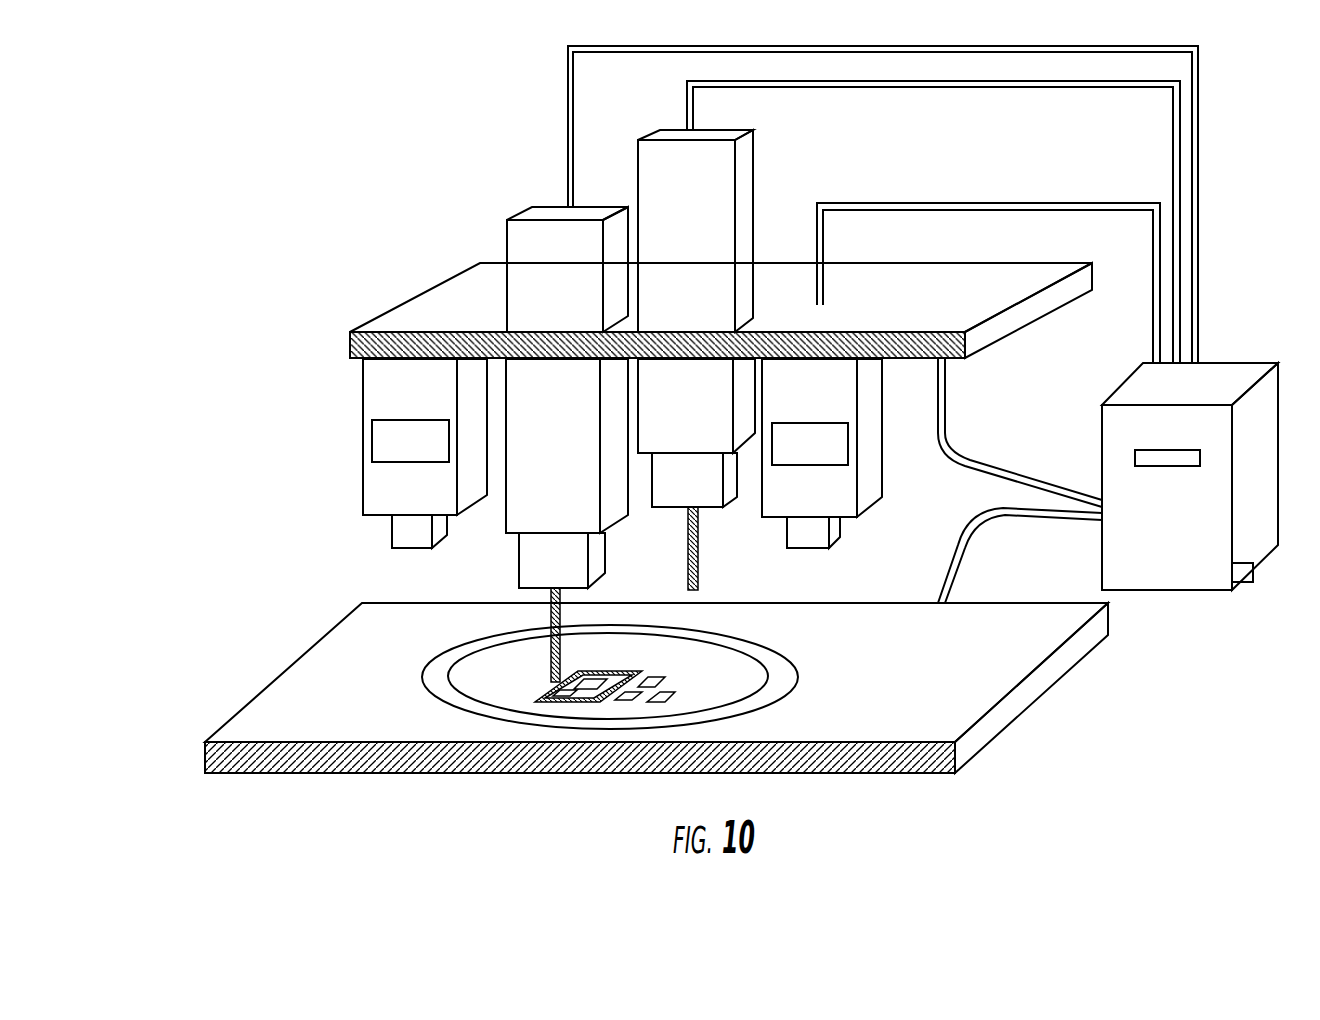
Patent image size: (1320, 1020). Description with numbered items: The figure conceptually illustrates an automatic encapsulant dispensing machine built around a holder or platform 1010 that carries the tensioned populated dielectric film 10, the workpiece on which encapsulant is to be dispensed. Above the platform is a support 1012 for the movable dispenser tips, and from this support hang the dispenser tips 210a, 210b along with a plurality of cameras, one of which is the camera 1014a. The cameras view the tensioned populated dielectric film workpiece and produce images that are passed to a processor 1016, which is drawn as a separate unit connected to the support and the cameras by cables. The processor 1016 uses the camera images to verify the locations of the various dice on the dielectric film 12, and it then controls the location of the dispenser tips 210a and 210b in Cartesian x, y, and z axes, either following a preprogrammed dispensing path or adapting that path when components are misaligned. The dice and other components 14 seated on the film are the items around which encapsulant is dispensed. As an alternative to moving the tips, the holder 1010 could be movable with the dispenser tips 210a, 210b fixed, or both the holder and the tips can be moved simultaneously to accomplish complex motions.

The support 1012 is at (353, 360).
The camera 1014a is at (363, 437).
The dispenser tip 210a is at (517, 578).
The dispenser tip 210b is at (700, 578).
The processor 1016 is at (1208, 533).
The holder or platform 1010 is at (325, 643).
The tensioned populated dielectric film 10 is at (748, 667).
The dielectric film 12 is at (852, 672).
The chip components 14 is at (685, 707).